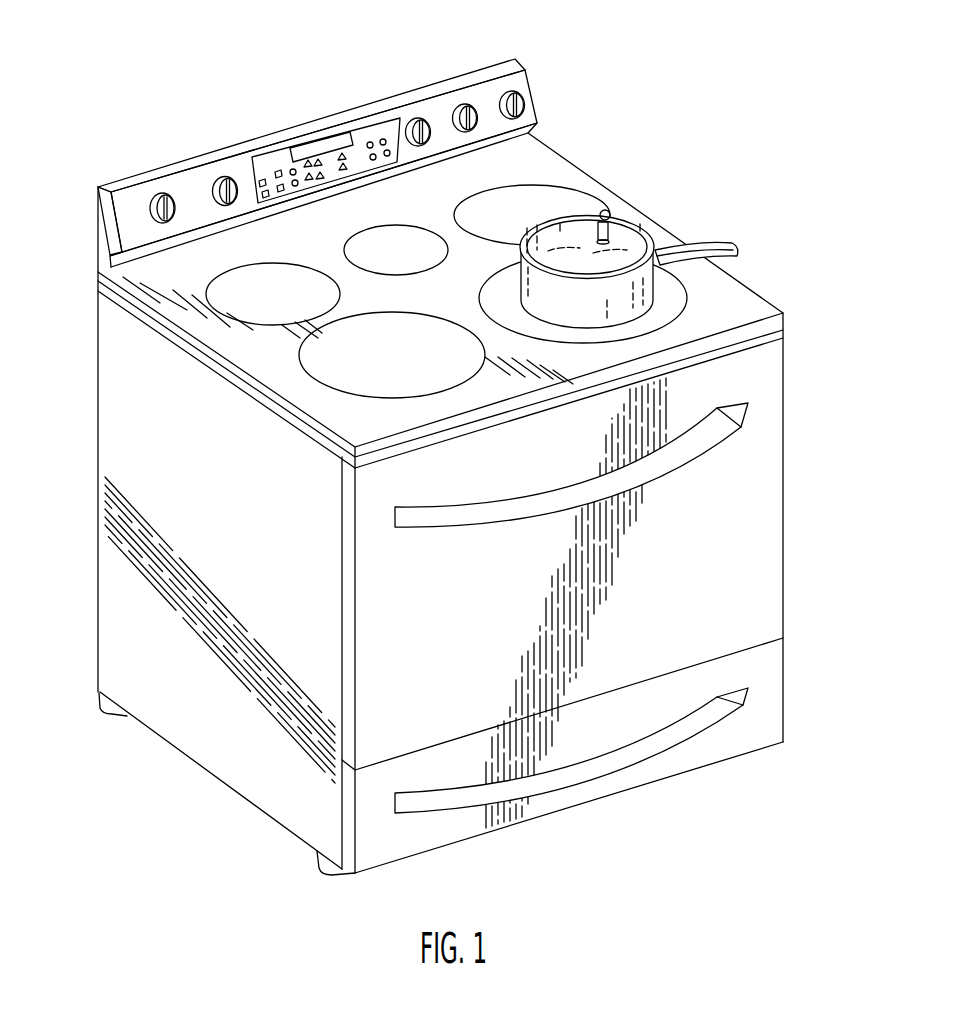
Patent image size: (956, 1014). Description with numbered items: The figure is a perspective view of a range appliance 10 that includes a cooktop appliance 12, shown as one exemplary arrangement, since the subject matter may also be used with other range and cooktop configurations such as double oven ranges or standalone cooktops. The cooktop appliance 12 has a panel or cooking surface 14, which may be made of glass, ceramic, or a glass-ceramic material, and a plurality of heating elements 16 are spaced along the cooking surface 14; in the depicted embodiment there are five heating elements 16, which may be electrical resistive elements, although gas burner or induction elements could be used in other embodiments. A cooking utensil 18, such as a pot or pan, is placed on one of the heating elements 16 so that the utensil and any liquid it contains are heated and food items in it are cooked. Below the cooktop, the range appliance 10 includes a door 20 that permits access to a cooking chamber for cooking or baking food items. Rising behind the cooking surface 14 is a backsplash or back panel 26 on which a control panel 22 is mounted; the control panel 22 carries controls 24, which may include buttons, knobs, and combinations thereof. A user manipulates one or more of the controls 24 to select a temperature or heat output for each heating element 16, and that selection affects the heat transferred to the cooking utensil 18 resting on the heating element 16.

The range appliance 10 is at (97, 110).
The cooktop appliance 12 is at (610, 121).
The cooking surface 14 is at (266, 355).
The heating elements 16 is at (578, 205).
The cooking utensil 18 is at (618, 233).
The door 20 is at (740, 307).
The control panel 22 is at (438, 102).
The controls 24 is at (380, 134).
The back panel 26 is at (107, 230).